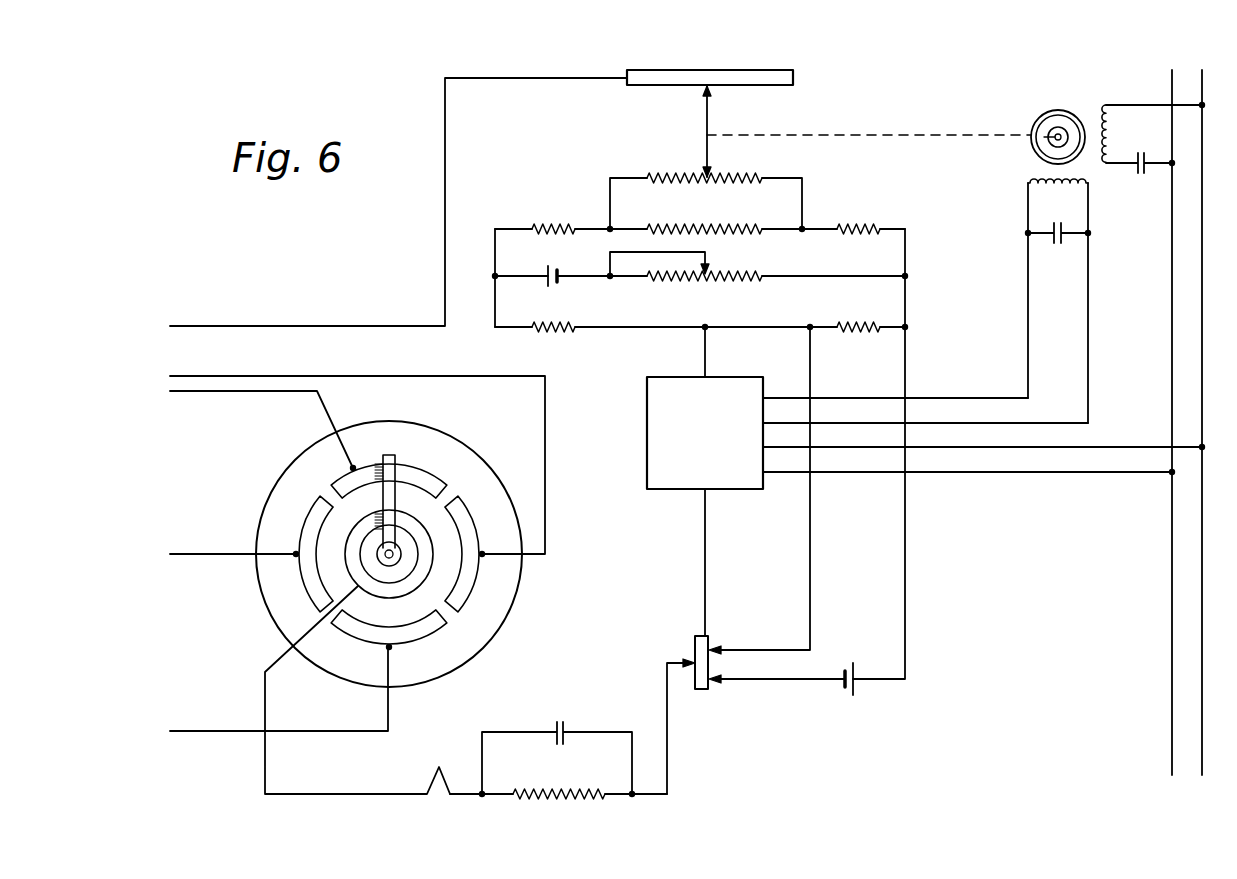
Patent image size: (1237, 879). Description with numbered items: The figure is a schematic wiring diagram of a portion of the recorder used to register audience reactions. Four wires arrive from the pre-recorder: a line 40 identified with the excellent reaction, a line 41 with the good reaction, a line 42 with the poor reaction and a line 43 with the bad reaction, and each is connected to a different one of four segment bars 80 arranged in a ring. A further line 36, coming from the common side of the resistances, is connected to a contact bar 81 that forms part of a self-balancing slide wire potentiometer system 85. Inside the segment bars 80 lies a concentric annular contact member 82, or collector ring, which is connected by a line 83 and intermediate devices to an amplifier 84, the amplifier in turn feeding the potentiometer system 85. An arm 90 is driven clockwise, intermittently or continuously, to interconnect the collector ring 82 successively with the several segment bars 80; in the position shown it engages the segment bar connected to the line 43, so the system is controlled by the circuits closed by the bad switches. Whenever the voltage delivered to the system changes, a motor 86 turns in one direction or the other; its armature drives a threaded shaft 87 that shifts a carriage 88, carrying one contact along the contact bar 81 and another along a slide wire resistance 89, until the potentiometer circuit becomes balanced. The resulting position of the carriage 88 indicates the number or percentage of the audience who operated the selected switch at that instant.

The line 36 is at (302, 327).
The line 40 is at (267, 375).
The line 41 is at (213, 730).
The line 42 is at (218, 543).
The line 43 is at (267, 393).
The segment bars 80 is at (443, 480).
The contact bar 81 is at (795, 77).
The annular contact member 82 is at (398, 585).
The line 83 is at (393, 797).
The amplifier 84 is at (657, 448).
The slide wire potentiometer system 85 is at (650, 331).
The motor 86 is at (1060, 110).
The shaft 87 is at (935, 132).
The carriage 88 is at (703, 110).
The slide wire resistance 89 is at (737, 172).
The arm 90 is at (387, 457).